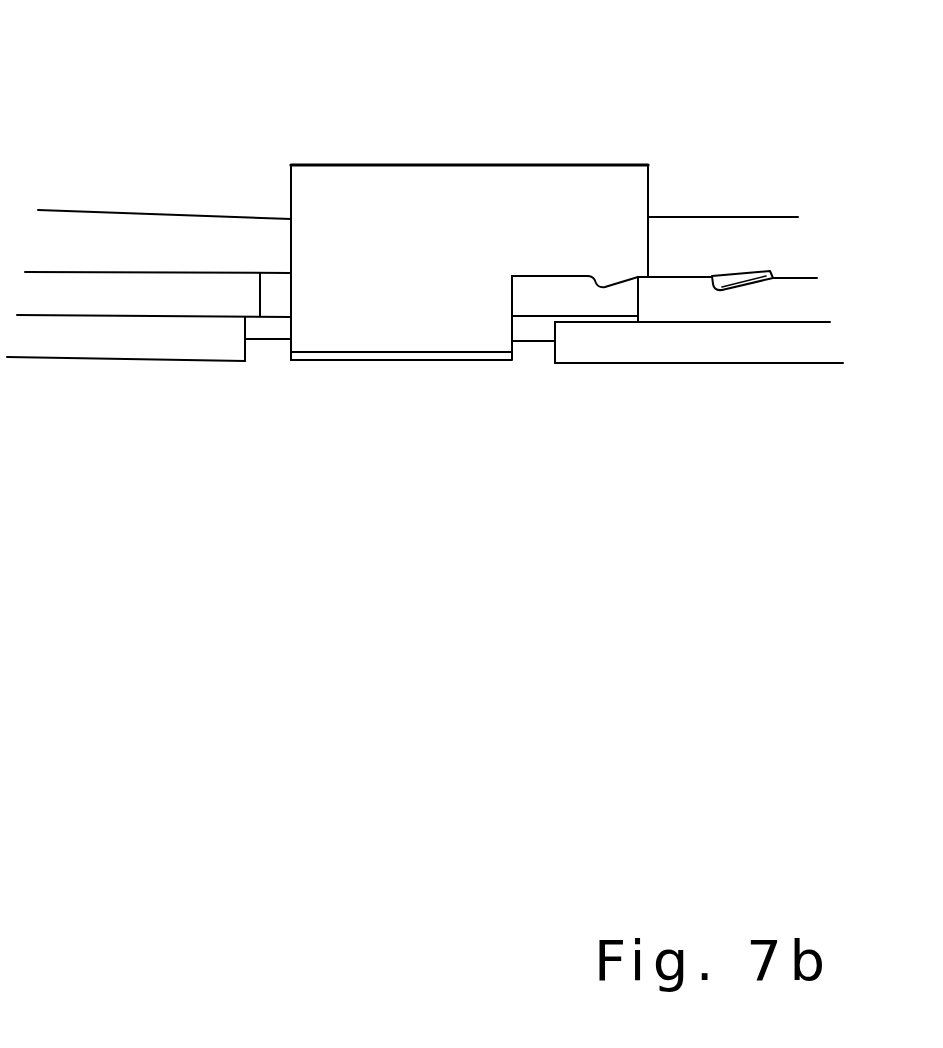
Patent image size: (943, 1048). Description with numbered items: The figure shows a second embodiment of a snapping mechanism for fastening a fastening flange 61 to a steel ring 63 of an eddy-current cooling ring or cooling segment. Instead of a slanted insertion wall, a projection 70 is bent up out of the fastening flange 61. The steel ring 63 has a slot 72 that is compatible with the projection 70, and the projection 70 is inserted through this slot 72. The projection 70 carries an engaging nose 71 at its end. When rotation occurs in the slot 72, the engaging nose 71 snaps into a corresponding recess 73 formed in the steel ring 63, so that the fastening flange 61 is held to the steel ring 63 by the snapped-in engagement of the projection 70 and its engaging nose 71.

The projection 70 is at (399, 216).
The engaging nose 71 is at (603, 283).
The slot 72 is at (537, 367).
The recess 73 is at (733, 277).
The steel ring 63 is at (766, 253).
The fastening flange 61 is at (738, 347).